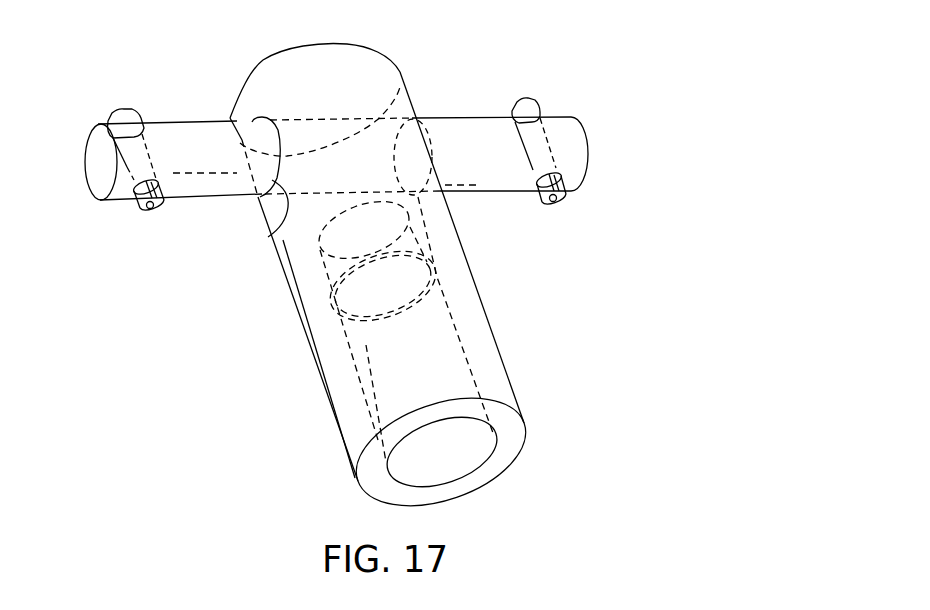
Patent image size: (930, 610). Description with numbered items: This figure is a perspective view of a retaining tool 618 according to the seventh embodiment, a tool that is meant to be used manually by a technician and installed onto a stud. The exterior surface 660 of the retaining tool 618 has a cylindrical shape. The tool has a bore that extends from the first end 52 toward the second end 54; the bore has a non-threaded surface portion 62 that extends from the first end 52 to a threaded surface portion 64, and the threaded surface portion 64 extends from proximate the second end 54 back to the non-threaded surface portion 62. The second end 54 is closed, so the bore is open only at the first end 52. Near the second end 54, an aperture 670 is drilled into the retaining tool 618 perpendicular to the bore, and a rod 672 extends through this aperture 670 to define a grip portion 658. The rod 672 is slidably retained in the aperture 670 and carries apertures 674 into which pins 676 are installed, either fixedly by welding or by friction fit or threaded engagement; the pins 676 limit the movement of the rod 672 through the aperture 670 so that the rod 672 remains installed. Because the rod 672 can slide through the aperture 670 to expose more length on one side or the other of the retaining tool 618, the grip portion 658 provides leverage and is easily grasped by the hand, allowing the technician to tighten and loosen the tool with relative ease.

The retaining tool 618 is at (447, 40).
The second end 54 is at (263, 70).
The first end 52 is at (513, 438).
The non-threaded surface portion 62 is at (458, 455).
The threaded surface portion 64 is at (437, 277).
The grip portion 658 is at (492, 170).
The exterior surface 660 is at (312, 357).
The aperture 670 is at (268, 236).
The rod 672 is at (458, 125).
The apertures 674 is at (148, 214).
The pins 676 is at (115, 110).